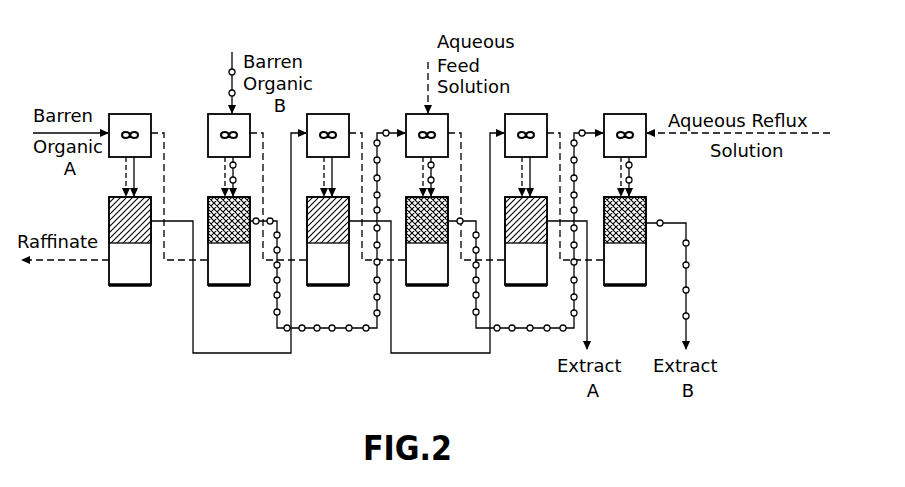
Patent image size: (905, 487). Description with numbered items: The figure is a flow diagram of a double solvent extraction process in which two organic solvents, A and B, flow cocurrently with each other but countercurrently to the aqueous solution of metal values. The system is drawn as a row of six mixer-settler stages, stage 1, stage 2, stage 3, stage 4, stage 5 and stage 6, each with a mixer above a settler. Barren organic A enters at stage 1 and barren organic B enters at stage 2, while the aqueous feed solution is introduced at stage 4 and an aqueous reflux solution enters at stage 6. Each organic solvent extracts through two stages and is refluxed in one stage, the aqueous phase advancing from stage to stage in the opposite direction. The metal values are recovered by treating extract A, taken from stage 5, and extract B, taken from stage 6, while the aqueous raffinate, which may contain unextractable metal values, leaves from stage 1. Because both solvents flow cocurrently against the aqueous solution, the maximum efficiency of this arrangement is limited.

The stage 1 is at (130, 215).
The stage 2 is at (229, 215).
The stage 3 is at (328, 215).
The stage 4 is at (427, 215).
The stage 5 is at (526, 215).
The stage 6 is at (625, 215).